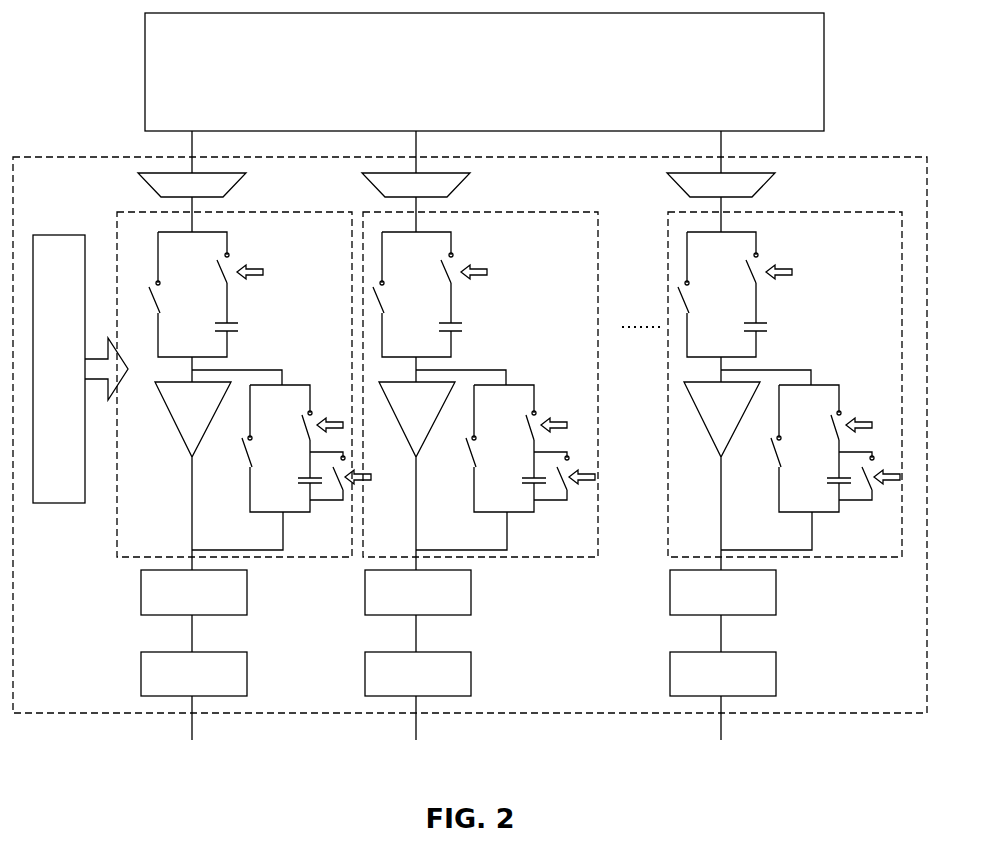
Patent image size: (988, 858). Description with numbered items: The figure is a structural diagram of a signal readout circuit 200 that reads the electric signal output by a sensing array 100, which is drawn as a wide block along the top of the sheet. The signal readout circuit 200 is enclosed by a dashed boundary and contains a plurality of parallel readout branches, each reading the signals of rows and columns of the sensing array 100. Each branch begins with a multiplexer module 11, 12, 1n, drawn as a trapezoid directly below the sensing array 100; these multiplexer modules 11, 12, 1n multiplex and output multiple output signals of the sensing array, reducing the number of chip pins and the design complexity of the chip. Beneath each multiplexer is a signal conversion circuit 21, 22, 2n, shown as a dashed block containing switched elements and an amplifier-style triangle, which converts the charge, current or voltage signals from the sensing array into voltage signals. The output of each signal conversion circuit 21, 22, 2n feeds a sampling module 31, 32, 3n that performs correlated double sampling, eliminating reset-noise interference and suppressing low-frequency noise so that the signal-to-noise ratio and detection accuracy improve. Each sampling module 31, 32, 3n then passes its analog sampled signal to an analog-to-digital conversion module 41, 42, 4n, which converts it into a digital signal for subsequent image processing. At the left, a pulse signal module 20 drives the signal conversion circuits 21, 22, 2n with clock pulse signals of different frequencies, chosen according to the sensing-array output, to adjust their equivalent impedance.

The signal readout circuit 200 is at (66, 157).
The sensing array 100 is at (484, 72).
The multiplexer module 11 is at (192, 181).
The multiplexer module 12 is at (416, 181).
The multiplexer module 1n is at (721, 181).
The pulse signal module 20 is at (80, 369).
The signal conversion circuit 21 is at (315, 557).
The signal conversion circuit 22 is at (575, 557).
The signal conversion circuit 2n is at (872, 557).
The sampling module 31 is at (194, 592).
The sampling module 32 is at (418, 592).
The sampling module 3n is at (723, 592).
The analog-to-digital conversion module 41 is at (194, 677).
The analog-to-digital conversion module 42 is at (418, 677).
The analog-to-digital conversion module 4n is at (723, 677).